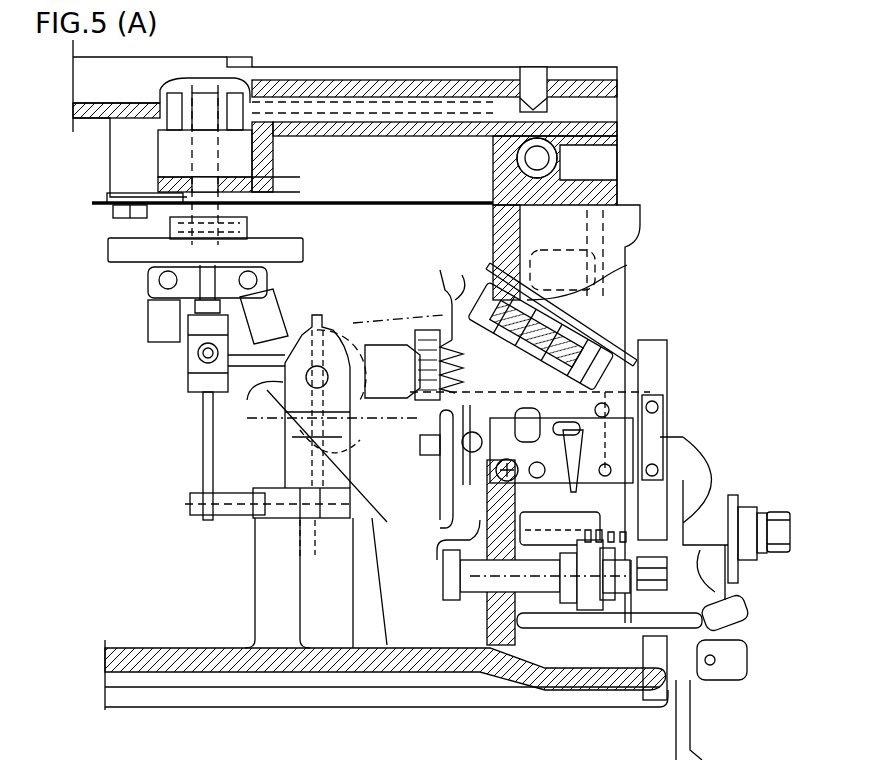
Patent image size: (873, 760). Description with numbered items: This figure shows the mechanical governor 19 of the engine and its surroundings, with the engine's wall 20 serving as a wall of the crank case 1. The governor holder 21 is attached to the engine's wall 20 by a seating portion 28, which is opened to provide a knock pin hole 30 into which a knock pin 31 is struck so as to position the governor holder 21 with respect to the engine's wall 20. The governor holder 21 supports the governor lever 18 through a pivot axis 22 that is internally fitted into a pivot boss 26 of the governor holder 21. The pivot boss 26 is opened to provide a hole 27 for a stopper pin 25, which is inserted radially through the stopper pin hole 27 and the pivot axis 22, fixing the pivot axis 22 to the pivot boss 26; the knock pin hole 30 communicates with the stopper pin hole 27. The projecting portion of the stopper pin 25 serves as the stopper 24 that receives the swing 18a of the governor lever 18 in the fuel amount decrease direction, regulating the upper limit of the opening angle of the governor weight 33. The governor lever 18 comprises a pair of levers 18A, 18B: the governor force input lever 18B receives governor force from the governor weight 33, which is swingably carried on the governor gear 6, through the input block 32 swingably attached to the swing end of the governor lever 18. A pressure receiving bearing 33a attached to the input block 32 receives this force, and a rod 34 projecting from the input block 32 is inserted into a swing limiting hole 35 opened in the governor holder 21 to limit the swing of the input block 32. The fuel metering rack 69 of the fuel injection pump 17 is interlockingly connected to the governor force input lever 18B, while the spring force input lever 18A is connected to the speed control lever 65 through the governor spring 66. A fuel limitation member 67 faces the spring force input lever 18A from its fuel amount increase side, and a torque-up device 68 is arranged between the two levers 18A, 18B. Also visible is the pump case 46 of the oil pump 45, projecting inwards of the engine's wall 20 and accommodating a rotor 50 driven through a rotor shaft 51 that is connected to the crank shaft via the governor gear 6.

The crank case 1 is at (641, 302).
The governor gear 6 is at (112, 262).
The fuel injection pump 17 is at (640, 400).
The governor lever 18 is at (405, 470).
The swing 18a is at (468, 274).
The spring force input lever 18A is at (400, 465).
The governor force input lever 18B is at (428, 498).
The mechanical governor 19 is at (150, 354).
The engine's wall 20 is at (150, 112).
The governor holder 21 is at (247, 534).
The pivot axis 22 is at (262, 398).
The stopper 24 is at (360, 322).
The stopper pin 25 is at (330, 441).
The pivot boss 26 is at (352, 405).
The stopper pin hole 27 is at (345, 340).
The seating portion 28 is at (330, 507).
The knock pin hole 30 is at (245, 518).
The knock pin 31 is at (315, 540).
The input block 32 is at (195, 328).
The governor weight 33 is at (262, 312).
The pressure receiving bearing 33a is at (255, 265).
The rod 34 is at (203, 440).
The swing limiting hole 35 is at (190, 500).
The oil pump 45 is at (291, 153).
The pump case 46 is at (285, 172).
The rotor 50 is at (175, 155).
The rotor shaft 51 is at (180, 212).
The speed control lever 65 is at (456, 592).
The governor spring 66 is at (543, 552).
The fuel limitation member 67 is at (540, 275).
The torque-up device 68 is at (413, 330).
The fuel metering rack 69 is at (625, 435).